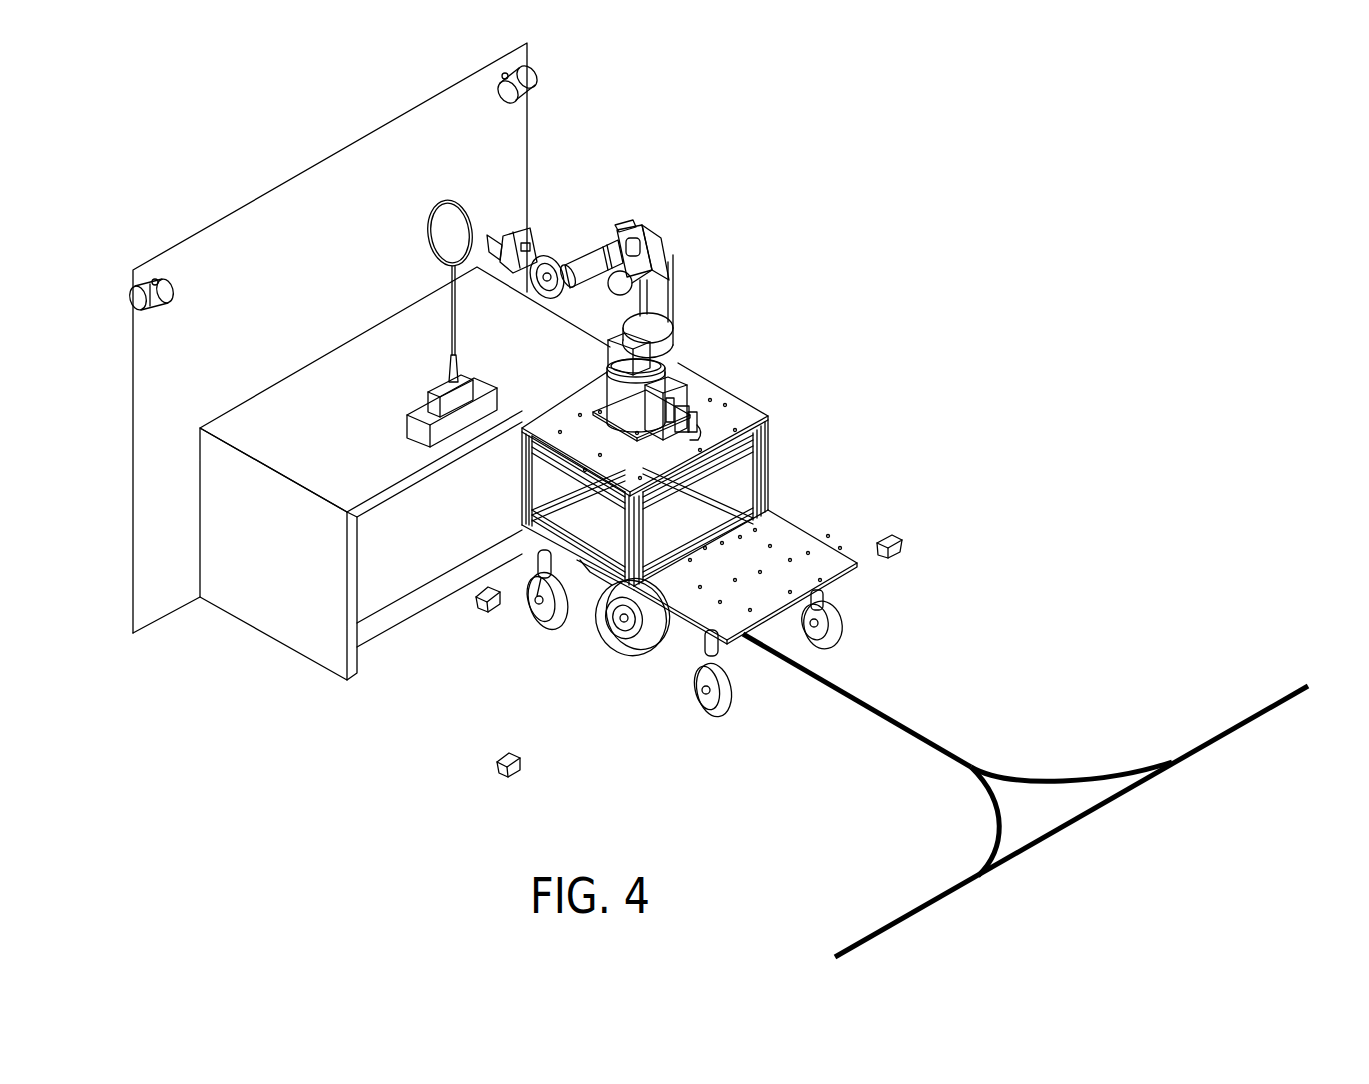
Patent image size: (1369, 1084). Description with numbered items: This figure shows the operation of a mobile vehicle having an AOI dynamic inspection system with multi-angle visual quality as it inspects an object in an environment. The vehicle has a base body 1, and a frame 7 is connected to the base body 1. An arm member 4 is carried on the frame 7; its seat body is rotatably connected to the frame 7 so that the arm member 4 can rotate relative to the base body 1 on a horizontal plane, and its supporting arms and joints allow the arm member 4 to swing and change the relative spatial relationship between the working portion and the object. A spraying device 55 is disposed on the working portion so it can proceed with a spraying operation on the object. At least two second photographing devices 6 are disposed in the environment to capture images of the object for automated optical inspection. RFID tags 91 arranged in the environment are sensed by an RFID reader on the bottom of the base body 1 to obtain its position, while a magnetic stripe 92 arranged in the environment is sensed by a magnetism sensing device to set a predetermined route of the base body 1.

The base body 1 is at (689, 560).
The arm member 4 is at (636, 293).
The spraying device 55 is at (523, 232).
The second photographing device 6 is at (153, 290).
The frame 7 is at (762, 465).
The RFID tag 91 is at (893, 535).
The magnetic stripe 92 is at (874, 713).